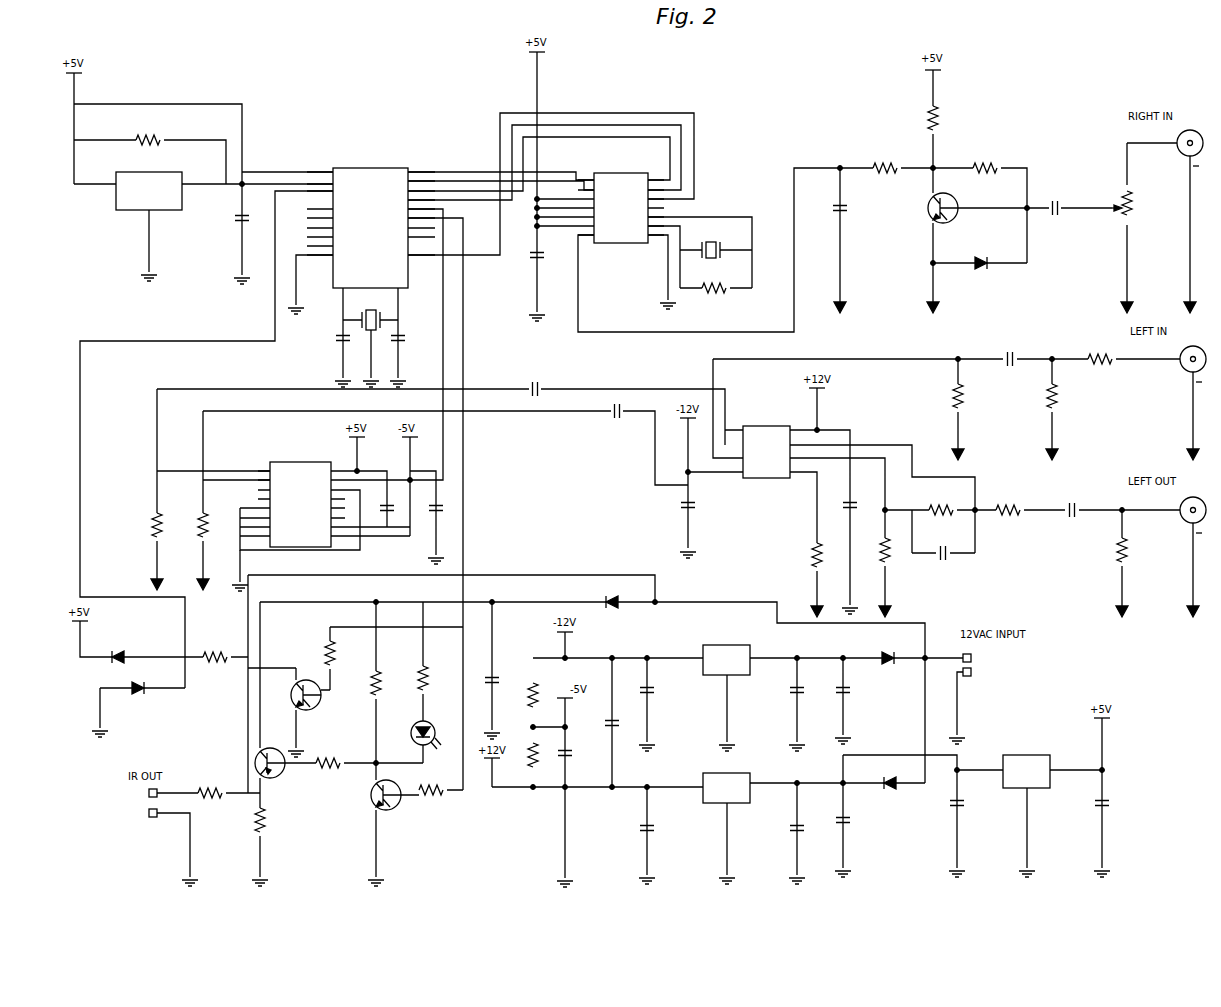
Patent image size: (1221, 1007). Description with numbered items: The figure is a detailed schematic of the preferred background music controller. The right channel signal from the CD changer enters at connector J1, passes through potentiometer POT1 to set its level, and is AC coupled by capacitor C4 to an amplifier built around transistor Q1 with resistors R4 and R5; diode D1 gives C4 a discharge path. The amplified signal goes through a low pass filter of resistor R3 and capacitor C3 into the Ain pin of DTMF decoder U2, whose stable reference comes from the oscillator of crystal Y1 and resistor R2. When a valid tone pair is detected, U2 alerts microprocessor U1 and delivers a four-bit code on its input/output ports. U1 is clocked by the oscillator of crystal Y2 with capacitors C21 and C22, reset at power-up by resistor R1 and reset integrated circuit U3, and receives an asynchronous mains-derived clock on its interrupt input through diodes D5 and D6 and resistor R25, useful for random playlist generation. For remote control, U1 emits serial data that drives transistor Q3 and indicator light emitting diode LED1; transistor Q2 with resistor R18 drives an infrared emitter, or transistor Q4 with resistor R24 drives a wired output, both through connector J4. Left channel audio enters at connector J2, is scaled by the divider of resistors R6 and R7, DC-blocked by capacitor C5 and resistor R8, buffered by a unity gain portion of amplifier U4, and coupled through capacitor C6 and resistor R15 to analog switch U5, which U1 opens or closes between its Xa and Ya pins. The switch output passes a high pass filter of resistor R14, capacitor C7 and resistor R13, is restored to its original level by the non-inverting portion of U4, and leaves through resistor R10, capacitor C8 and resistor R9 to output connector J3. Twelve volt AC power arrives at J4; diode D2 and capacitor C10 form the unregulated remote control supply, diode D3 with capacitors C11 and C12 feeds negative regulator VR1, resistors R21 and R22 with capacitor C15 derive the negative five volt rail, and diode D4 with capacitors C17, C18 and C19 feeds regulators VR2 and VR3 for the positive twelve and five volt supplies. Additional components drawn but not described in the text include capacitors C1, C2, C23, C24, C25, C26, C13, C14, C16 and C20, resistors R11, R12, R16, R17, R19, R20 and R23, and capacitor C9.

The resistor R1 is at (158, 134).
The reset integrated circuit U3 is at (143, 218).
The capacitor .1UF C1 is at (245, 234).
The microprocessor U1 is at (371, 235).
The crystal Y2 is at (370, 342).
The capacitor C21 is at (342, 353).
The capacitor C22 is at (397, 353).
The DTMF decoder U2 is at (618, 197).
The capacitor .1UF C2 is at (540, 283).
The crystal Y1 is at (700, 252).
The resistor R2 is at (716, 280).
The resistor R3 is at (886, 170).
The resistor R4 is at (985, 170).
The resistor R5 is at (936, 119).
The capacitor C3 is at (842, 214).
The transistor Q1 is at (955, 210).
The capacitor C4 is at (1054, 206).
The diode D1 is at (980, 266).
The potentiometer POT1 is at (1129, 198).
The right channel input connector J1 is at (1184, 137).
The left input connector J2 is at (1187, 353).
The left channel output connector J3 is at (1187, 503).
The capacitor C5 is at (1009, 357).
The resistor R6 is at (1100, 357).
The resistor R8 is at (960, 399).
The resistor R7 is at (1054, 397).
The capacitor C6 is at (531, 386).
The capacitor C7 is at (614, 407).
The capacitor .1UF C23 is at (690, 527).
The amplifier U4 is at (764, 444).
The capacitor .1UF C24 is at (852, 507).
The resistor R13 is at (820, 555).
The resistor 10K R12 is at (888, 550).
The resistor 36K R11 is at (941, 510).
The capacitor 100PF C9 is at (943, 554).
The resistor R10 is at (1008, 510).
The capacitor C8 is at (1069, 508).
The resistor R9 is at (1125, 552).
The analog switch U5 is at (300, 497).
The resistor R15 is at (160, 489).
The resistor R14 is at (206, 500).
The capacitor .1UF C25 is at (390, 511).
The capacitor .1UF C26 is at (439, 532).
The diode D5 is at (124, 650).
The diode D6 is at (142, 679).
The resistor R25 is at (214, 650).
The transistor Q4 is at (314, 698).
The resistor R24 is at (333, 653).
The transistor Q2 is at (283, 765).
The resistor R18 is at (328, 767).
The resistor 1K R16 is at (380, 683).
The resistor 1K R17 is at (427, 661).
The indicator light emitting diode LED1 is at (419, 740).
The transistor Q3 is at (364, 793).
The resistor 10K R20 is at (431, 793).
The resistor 1K R23 is at (264, 820).
The resistor 470 R19 is at (210, 794).
The connector J4 is at (561, 735).
The capacitor C10 is at (494, 691).
The resistor R21 is at (537, 695).
The resistor R22 is at (537, 756).
The capacitor C15 is at (568, 761).
The capacitor .1UF C14 is at (614, 722).
The capacitor .1UF C13 is at (650, 694).
The capacitor .1UF C16 is at (650, 831).
The negative twelve volt regulator VR1 is at (717, 688).
The voltage regulator VR2 is at (722, 818).
The diode D2 is at (617, 602).
The capacitor C12 is at (800, 694).
The capacitor C11 is at (846, 696).
The diode D3 is at (892, 659).
The diode D4 is at (892, 783).
The capacitor C17 is at (800, 831).
The capacitor C18 is at (846, 825).
The capacitor C19 is at (960, 807).
The voltage regulator VR3 is at (1018, 807).
The capacitor .1UF C20 is at (1105, 807).